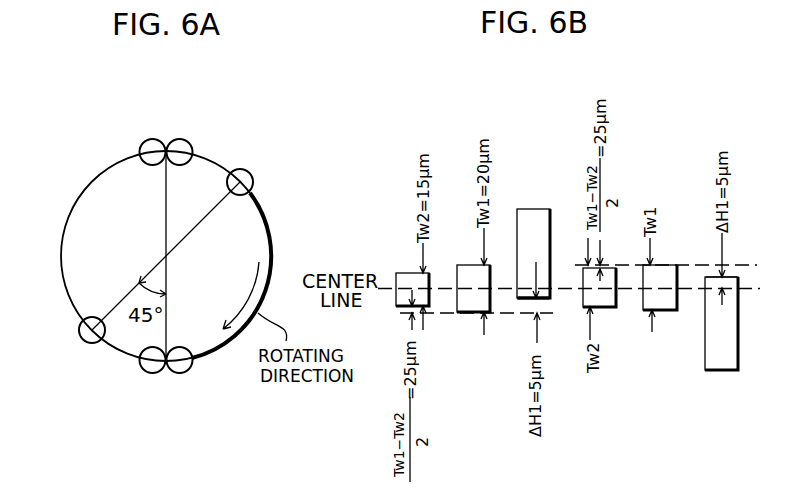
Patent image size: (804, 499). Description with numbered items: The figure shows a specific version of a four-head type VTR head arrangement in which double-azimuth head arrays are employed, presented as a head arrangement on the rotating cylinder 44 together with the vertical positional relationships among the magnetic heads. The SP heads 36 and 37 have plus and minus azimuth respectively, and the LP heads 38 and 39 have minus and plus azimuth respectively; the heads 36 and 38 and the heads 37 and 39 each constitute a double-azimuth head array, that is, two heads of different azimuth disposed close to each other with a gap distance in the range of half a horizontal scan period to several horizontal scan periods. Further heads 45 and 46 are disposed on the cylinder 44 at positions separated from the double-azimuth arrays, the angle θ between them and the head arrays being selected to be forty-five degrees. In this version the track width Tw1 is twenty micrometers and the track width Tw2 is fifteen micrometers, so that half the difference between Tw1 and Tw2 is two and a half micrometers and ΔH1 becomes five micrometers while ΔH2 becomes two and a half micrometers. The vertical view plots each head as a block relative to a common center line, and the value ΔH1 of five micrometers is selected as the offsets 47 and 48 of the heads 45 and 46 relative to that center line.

In FIG. 6A, the SP head 36 is at (152, 373).
In FIG. 6B, the SP head 36 is at (462, 265).
In FIG. 6A, the SP head 37 is at (188, 142).
In FIG. 6B, the SP head 37 is at (665, 312).
In FIG. 6A, the LP head 38 is at (180, 373).
In FIG. 6B, the LP head 38 is at (403, 272).
In FIG. 6A, the LP head 39 is at (143, 142).
In FIG. 6B, the LP head 39 is at (603, 309).
In FIG. 6A, the rotary drum 44 is at (72, 206).
In FIG. 6A, the erase head 45 is at (91, 343).
In FIG. 6B, the erase head 45 is at (537, 208).
In FIG. 6A, the erase head 46 is at (250, 173).
In FIG. 6B, the erase head 46 is at (720, 372).
In FIG. 6B, the offset 47 is at (541, 303).
In FIG. 6B, the offset 48 is at (720, 274).